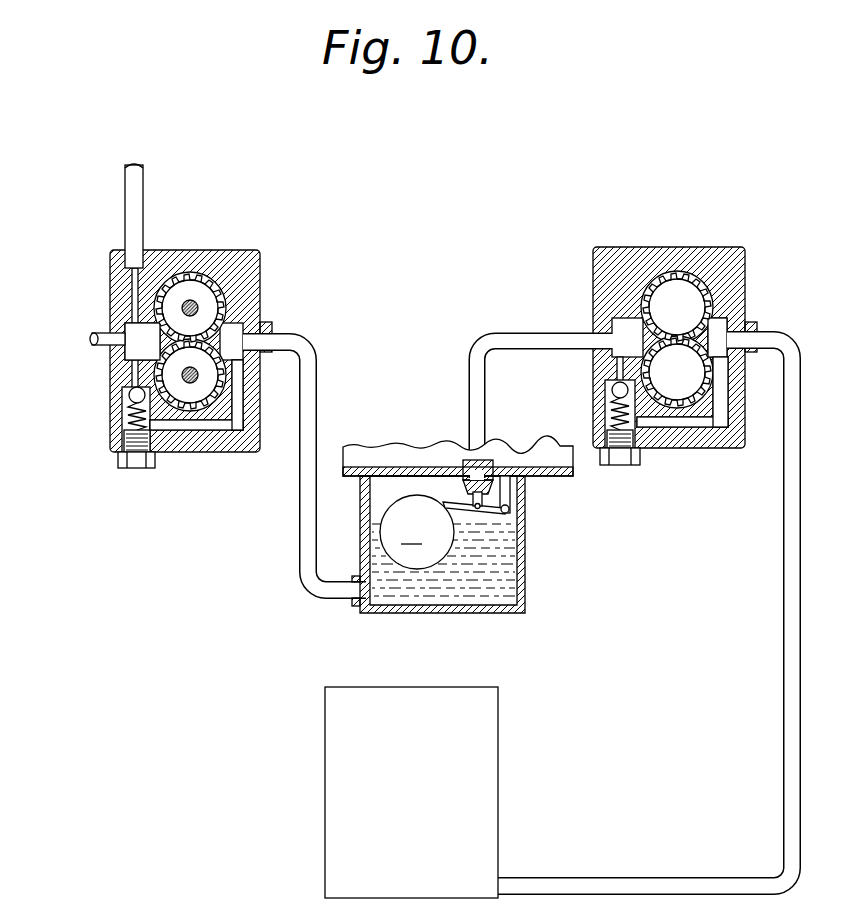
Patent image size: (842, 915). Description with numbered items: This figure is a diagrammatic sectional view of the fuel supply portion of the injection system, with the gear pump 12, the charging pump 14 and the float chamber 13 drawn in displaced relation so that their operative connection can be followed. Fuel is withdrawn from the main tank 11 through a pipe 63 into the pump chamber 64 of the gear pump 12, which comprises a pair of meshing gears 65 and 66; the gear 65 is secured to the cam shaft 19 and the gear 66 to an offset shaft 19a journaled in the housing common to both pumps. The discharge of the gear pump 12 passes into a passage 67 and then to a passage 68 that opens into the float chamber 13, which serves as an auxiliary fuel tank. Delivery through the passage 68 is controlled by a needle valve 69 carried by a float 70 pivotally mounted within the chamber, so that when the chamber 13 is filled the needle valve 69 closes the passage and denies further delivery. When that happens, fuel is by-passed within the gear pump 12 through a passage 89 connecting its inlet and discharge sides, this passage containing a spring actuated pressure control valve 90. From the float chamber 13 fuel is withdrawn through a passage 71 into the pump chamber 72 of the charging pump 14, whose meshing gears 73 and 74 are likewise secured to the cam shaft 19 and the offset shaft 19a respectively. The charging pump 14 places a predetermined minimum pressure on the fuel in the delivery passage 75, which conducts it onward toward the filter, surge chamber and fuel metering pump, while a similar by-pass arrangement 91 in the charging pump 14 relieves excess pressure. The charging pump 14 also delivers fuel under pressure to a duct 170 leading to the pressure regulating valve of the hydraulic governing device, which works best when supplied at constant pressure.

The main tank 11 is at (492, 780).
The gear pump 12 is at (680, 302).
The float chamber 13 is at (525, 585).
The charging pump 14 is at (260, 286).
The cam shaft 19 is at (198, 305).
The offset shaft 19a is at (190, 377).
The pipe 63 is at (784, 632).
The pump chamber 64 is at (718, 332).
The gear 65 is at (670, 273).
The gear 66 is at (677, 395).
The passage 67 is at (540, 333).
The passage 68 is at (500, 476).
The needle valve 69 is at (470, 496).
The float 70 is at (417, 532).
The passage 71 is at (316, 596).
The pump chamber 72 is at (137, 345).
The gear 73 is at (187, 287).
The gear 74 is at (193, 393).
The fuel delivery passage 75 is at (102, 333).
The by-pass passage 89 is at (697, 428).
The spring actuated pressure control valve 90 is at (612, 390).
The by-pass arrangement 91 is at (217, 428).
The duct 170 is at (138, 208).